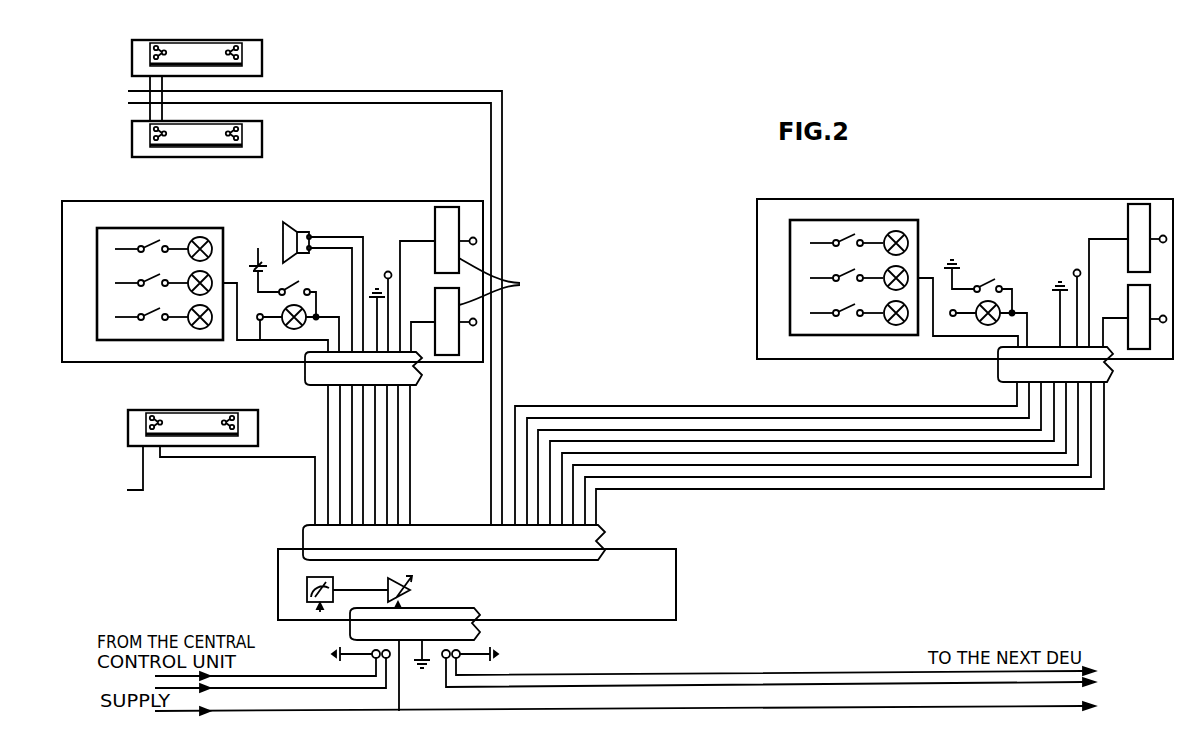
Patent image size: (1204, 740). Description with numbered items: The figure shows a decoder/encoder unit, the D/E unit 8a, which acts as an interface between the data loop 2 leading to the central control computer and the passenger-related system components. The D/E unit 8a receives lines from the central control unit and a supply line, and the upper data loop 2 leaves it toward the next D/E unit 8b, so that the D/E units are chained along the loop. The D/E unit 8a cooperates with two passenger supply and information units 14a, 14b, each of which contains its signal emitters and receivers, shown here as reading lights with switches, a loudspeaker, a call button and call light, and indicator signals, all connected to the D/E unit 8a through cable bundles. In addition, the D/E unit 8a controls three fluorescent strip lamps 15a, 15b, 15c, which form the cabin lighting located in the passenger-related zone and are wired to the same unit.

The data loop 2 is at (881, 672).
The D/E unit 8a is at (676, 597).
The D/E unit 8b is at (1106, 676).
The passenger supply and information unit 14a is at (483, 249).
The passenger supply and information unit 14b is at (757, 242).
The fluorescent strip lamp 15a is at (262, 66).
The fluorescent strip lamp 15b is at (262, 146).
The fluorescent strip lamp 15c is at (258, 440).